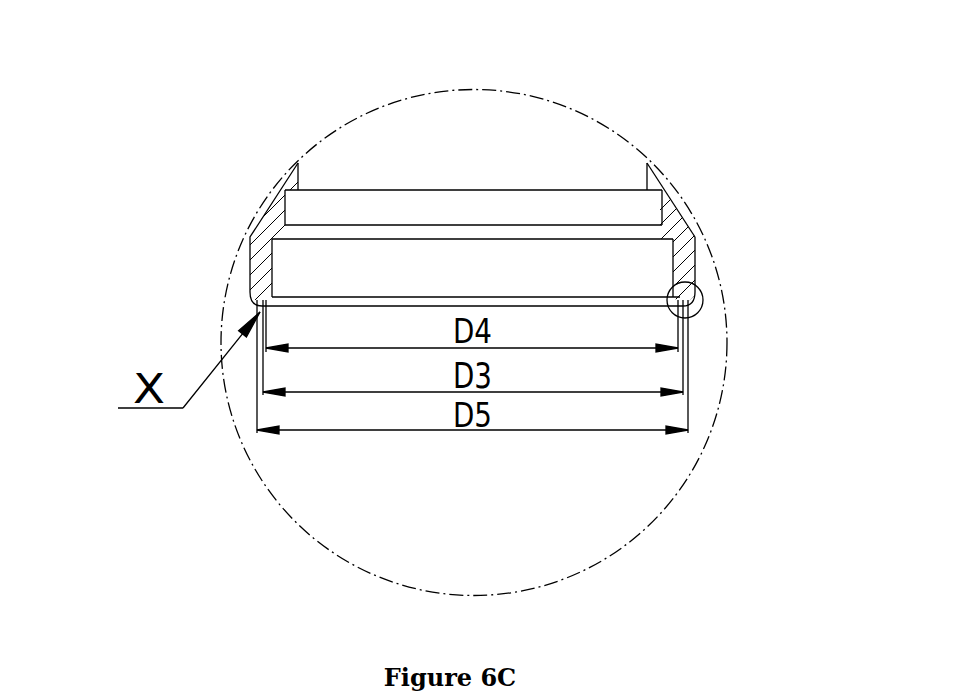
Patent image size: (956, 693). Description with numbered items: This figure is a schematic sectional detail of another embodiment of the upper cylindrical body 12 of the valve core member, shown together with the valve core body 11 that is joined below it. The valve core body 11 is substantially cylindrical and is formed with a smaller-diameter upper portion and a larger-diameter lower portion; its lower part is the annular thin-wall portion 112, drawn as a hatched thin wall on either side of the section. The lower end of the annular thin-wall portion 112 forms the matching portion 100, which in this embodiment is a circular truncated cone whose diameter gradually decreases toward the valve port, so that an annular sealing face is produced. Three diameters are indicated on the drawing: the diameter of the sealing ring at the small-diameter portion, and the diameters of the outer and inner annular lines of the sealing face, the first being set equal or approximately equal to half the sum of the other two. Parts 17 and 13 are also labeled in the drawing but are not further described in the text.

The upper cylindrical body 12 is at (458, 90).
The chamfered outer wall 17 is at (655, 175).
The valve core body 11 is at (685, 258).
The annular thin-wall portion 112 is at (260, 277).
The bottom edge / sealing ring 13 is at (706, 302).
The matching portion 100 is at (686, 306).